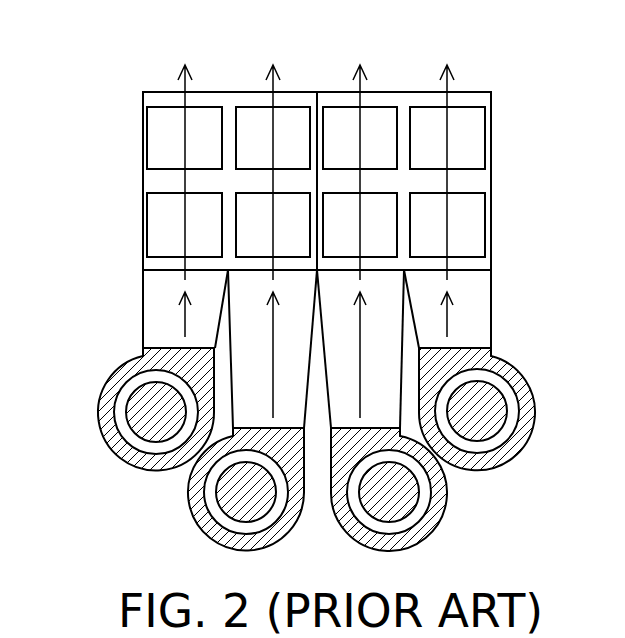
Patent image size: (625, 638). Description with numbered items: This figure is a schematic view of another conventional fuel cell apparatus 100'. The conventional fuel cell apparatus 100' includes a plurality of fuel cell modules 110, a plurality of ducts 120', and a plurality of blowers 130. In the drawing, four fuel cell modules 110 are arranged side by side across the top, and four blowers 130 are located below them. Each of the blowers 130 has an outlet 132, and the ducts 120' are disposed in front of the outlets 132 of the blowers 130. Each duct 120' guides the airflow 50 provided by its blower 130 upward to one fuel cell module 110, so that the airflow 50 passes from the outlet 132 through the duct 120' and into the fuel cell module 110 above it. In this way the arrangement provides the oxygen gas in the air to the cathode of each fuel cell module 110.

The conventional fuel cell apparatus 100' is at (374, 332).
The fuel cell module 110 is at (228, 61).
The duct 120' is at (249, 331).
The airflow 50 is at (147, 318).
The blower 130 is at (122, 455).
The outlet 132 is at (174, 338).